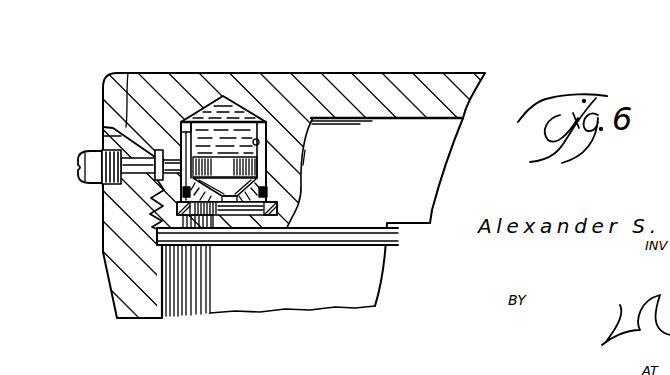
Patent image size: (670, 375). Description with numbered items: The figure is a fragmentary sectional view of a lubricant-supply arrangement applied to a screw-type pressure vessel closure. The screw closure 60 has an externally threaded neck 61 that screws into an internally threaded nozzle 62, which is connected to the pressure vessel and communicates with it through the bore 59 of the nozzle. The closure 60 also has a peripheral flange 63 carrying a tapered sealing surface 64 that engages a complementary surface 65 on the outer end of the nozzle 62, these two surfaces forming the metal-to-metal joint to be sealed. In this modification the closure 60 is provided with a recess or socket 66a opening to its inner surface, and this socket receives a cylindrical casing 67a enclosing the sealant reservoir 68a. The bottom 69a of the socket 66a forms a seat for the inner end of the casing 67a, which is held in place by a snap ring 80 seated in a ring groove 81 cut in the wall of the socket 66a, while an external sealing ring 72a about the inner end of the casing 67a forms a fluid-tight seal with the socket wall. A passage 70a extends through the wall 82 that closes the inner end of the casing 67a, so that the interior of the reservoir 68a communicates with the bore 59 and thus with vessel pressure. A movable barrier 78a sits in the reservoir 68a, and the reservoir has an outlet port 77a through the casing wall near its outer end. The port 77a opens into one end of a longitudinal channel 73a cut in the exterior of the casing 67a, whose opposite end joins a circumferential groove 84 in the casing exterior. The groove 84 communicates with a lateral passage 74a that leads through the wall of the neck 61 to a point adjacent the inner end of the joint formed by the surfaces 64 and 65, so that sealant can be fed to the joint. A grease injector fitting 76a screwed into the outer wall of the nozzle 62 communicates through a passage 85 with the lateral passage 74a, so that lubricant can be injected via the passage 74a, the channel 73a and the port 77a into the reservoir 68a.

The bore 59 is at (160, 288).
The screw closure 60 is at (381, 75).
The externally threaded neck 61 is at (149, 224).
The internally threaded nozzle 62 is at (108, 254).
The peripheral flange 63 is at (103, 94).
The tapered sealing surface 64 is at (128, 73).
The complementary surface 65 is at (116, 143).
The socket 66a is at (258, 214).
The cylindrical casing 67a is at (262, 138).
The sealant reservoir 68a is at (262, 155).
The bottom of socket 69a is at (232, 106).
The passage 70a is at (212, 190).
The external sealing ring 72a is at (275, 208).
The longitudinal channel 73a is at (183, 131).
The lateral passage 74a is at (152, 183).
The grease injector fitting 76a is at (82, 155).
The outlet port 77a is at (190, 128).
The movable barrier 78a is at (268, 192).
The snap ring 80 is at (250, 215).
The ring groove 81 is at (284, 206).
The wall 82 is at (210, 200).
The circumferential groove 84 is at (266, 172).
The passage 85 is at (103, 186).